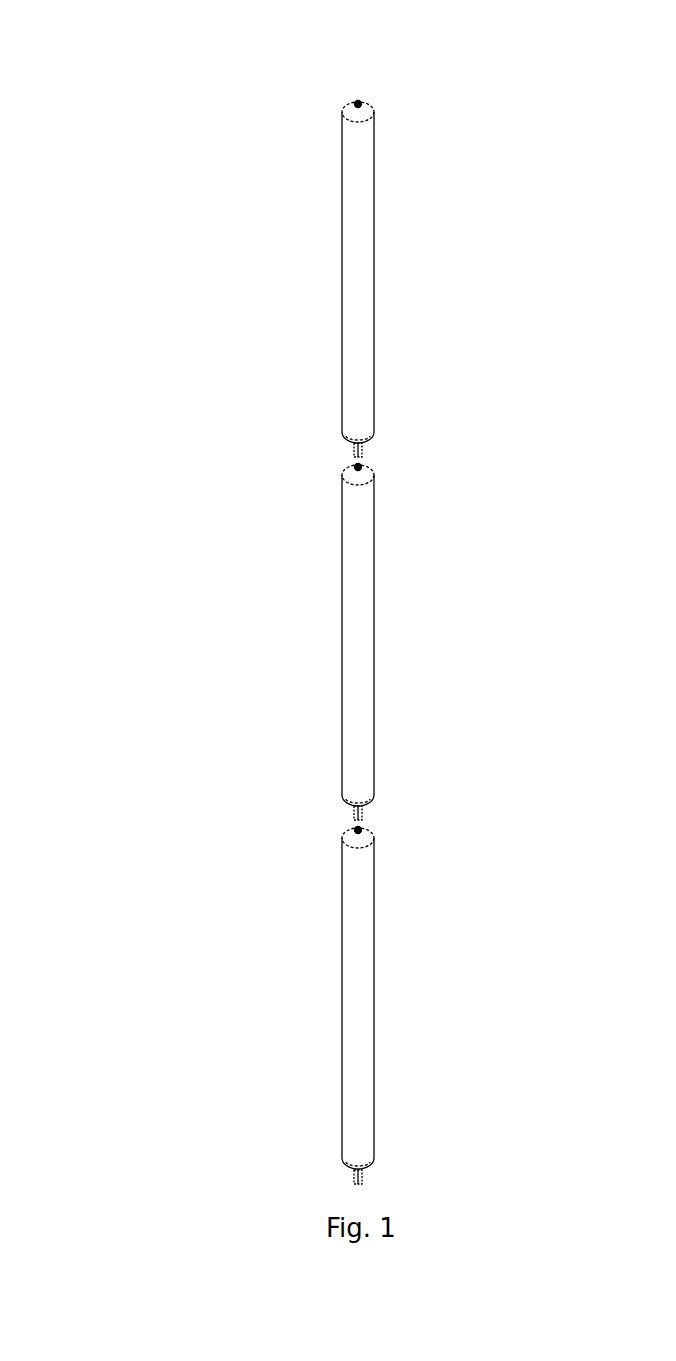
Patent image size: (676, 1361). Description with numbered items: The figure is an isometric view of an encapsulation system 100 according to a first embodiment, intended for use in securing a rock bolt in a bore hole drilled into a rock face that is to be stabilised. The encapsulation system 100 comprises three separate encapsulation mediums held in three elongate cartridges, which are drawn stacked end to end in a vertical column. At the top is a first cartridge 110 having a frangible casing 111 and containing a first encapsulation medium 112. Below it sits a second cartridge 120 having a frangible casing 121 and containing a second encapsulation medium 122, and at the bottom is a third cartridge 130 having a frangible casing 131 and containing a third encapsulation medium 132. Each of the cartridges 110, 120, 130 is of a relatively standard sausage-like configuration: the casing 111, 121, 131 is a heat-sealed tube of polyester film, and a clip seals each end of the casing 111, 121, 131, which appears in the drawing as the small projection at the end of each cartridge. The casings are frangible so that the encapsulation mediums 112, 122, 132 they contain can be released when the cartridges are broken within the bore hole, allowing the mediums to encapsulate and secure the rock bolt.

The encapsulation system 100 is at (203, 122).
The first cartridge 110 is at (312, 338).
The frangible casing 111 is at (378, 212).
The first encapsulation medium 112 is at (363, 330).
The second cartridge 120 is at (253, 688).
The frangible casing 121 is at (377, 605).
The second encapsulation medium 122 is at (356, 703).
The third cartridge 130 is at (262, 985).
The frangible casing 131 is at (377, 946).
The third encapsulation medium 132 is at (358, 1077).